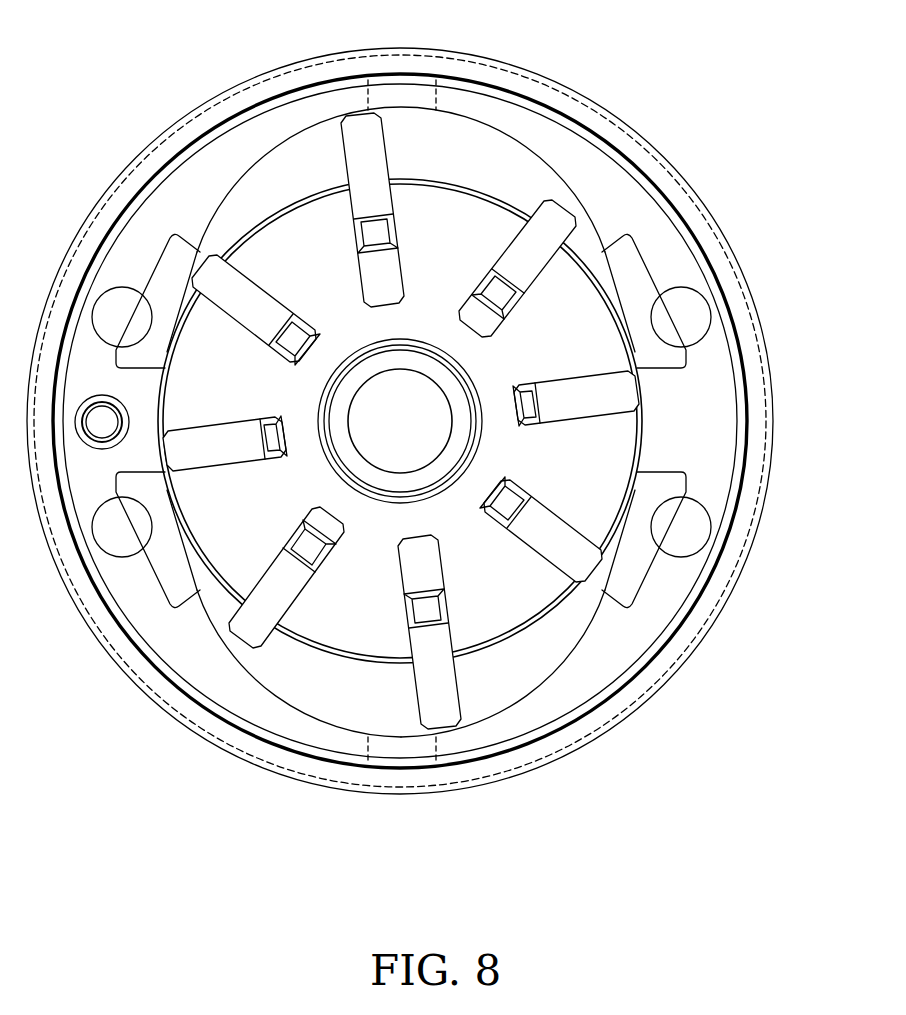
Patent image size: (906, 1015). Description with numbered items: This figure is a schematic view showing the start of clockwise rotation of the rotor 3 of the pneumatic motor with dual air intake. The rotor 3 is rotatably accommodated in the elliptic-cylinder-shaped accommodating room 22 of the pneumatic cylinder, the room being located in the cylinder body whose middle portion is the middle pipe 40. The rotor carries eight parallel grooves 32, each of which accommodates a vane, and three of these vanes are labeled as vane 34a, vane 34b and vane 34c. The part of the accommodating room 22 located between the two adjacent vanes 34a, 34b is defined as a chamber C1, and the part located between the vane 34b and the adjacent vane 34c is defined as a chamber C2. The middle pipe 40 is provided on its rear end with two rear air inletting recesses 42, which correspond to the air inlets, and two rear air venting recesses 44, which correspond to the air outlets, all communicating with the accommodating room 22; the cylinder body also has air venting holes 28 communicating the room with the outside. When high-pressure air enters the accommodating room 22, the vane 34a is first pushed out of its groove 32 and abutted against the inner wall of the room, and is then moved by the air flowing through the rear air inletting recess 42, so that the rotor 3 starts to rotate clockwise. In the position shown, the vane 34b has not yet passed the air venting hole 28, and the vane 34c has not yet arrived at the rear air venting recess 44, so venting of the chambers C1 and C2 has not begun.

The rotor 3 is at (505, 197).
The accommodating room 22 is at (285, 670).
The air venting hole 28 is at (438, 92).
The groove 32 is at (377, 277).
The vane 34a is at (610, 570).
The vane 34b is at (445, 675).
The vane 34c is at (243, 633).
The middle pipe 40 is at (444, 473).
The rear air inletting recess 42 is at (650, 562).
The rear air venting recess 44 is at (168, 582).
The chamber C1 is at (533, 643).
The chamber C2 is at (320, 702).